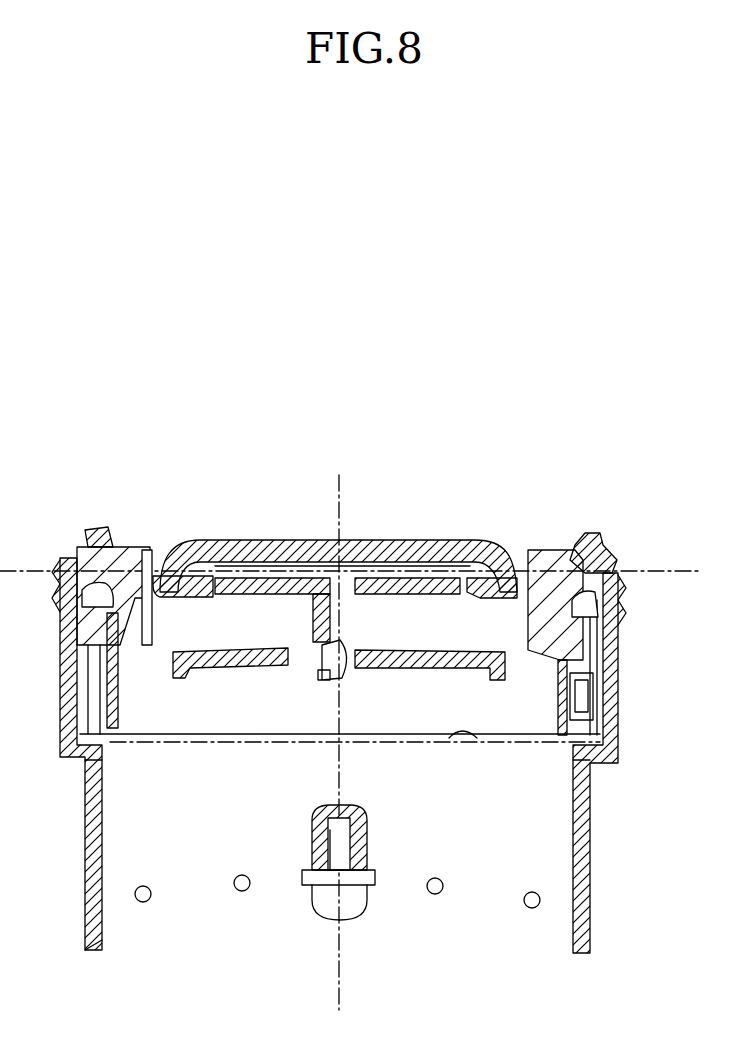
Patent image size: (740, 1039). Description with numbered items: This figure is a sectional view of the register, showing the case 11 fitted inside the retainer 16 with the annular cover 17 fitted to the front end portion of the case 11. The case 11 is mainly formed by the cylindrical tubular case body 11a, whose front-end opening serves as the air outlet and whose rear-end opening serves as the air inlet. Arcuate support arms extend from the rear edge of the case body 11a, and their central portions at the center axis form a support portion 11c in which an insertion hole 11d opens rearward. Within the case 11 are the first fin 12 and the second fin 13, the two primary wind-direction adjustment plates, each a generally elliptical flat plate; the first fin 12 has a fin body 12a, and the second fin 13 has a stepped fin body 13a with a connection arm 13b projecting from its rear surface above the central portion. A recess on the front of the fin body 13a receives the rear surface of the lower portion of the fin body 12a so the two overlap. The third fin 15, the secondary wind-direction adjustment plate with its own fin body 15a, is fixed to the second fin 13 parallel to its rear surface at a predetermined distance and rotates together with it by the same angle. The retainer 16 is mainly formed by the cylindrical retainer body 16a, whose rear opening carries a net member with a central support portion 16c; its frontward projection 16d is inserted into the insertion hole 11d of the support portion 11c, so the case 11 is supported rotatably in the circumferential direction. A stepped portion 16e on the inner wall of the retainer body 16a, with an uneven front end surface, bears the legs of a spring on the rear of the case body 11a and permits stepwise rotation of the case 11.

The case 11 is at (131, 547).
The case body 11a is at (568, 650).
The support portion 11c is at (322, 820).
The insertion hole 11d is at (325, 852).
The first fin 12 is at (456, 540).
The fin body 12a is at (380, 545).
The second fin 13 is at (287, 572).
The stepped fin body 13a is at (404, 586).
The connection arm 13b is at (313, 622).
The third fin 15 is at (400, 660).
The fin body 15a is at (249, 655).
The retainer 16 is at (62, 735).
The retainer body 16a is at (92, 852).
The support portion 16c is at (355, 906).
The projection 16d is at (350, 843).
The stepped portion 16e is at (468, 752).
The cover 17 is at (598, 540).